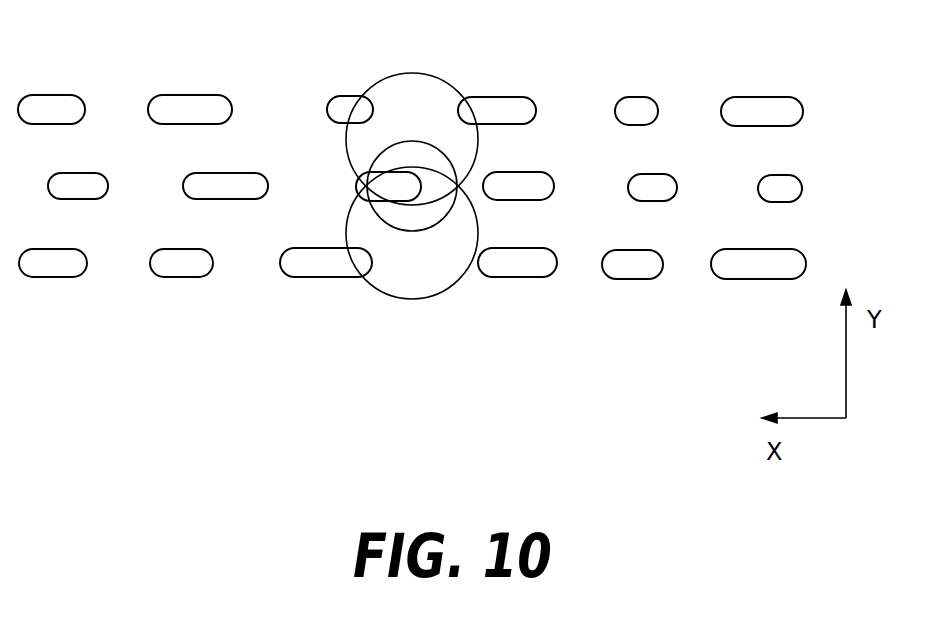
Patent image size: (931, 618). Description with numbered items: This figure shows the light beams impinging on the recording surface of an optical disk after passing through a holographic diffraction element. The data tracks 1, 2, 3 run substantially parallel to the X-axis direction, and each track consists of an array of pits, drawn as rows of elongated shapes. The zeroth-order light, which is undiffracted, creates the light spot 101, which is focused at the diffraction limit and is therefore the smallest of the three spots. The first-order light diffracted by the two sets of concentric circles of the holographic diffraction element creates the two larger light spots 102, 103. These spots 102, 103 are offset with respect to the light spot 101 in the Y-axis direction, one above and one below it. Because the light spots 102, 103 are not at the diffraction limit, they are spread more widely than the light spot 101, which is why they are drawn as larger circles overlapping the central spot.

The data track 1 is at (804, 111).
The data track 2 is at (803, 188).
The data track 3 is at (807, 264).
The light spot 101 is at (412, 231).
The light spot 102 is at (436, 77).
The light spot 103 is at (439, 294).